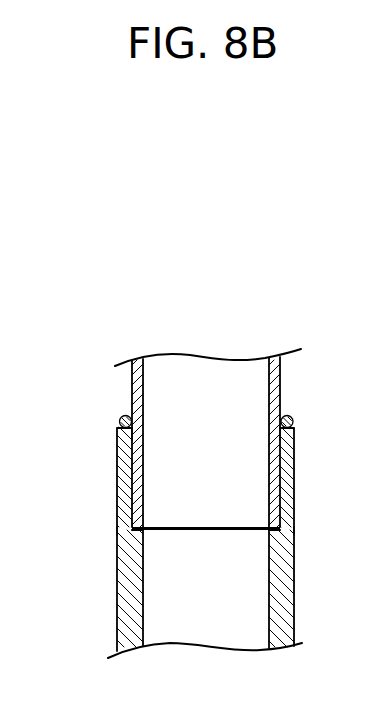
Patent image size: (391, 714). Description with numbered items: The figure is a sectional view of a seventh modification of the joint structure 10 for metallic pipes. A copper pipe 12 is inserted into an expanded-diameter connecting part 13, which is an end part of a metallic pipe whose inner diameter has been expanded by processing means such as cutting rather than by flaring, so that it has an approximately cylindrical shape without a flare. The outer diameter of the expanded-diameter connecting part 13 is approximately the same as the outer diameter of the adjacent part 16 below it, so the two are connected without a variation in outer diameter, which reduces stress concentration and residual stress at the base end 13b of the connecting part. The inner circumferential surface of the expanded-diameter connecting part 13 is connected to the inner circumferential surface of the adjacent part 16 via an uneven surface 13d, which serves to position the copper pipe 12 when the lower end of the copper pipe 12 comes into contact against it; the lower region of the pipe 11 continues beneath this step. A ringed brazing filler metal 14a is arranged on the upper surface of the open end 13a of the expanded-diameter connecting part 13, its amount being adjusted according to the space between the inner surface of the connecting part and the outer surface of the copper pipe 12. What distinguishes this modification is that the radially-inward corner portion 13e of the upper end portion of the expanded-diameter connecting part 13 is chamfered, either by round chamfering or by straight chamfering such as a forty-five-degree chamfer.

The joint structure 10 is at (93, 341).
The lower tube portion 11 is at (298, 596).
The copper pipe 12 is at (284, 370).
The expanded-diameter connecting part 13 is at (206, 544).
The open end 13a is at (113, 423).
The base end 13b is at (115, 530).
The uneven surface 13d is at (145, 531).
The radially-inward corner portion 13e is at (144, 426).
The ringed brazing filler metal 14a is at (124, 418).
The adjacent part 16 is at (110, 538).